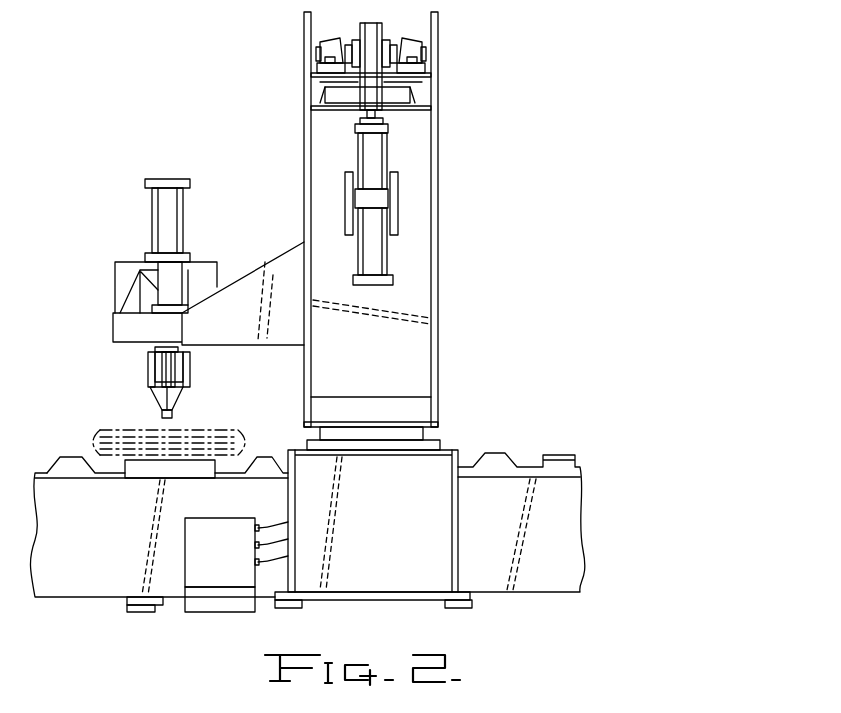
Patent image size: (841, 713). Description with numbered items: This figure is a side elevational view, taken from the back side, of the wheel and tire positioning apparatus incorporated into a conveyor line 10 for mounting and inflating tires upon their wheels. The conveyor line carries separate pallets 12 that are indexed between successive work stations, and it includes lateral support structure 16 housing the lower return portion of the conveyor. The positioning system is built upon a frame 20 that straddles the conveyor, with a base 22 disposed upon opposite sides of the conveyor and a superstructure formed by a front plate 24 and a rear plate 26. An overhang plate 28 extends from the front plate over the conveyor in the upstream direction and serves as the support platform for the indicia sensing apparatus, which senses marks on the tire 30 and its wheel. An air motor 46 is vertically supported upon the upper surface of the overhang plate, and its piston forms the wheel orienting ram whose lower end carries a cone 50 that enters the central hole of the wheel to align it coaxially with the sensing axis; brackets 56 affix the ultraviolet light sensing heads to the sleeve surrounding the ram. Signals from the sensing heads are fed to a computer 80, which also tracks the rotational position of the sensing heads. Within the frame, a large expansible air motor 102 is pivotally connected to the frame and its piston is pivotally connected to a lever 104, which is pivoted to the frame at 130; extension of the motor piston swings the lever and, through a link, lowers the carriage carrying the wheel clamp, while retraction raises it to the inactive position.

The conveyor line 10 is at (518, 447).
The pallet 12 is at (207, 458).
The lateral support structure 16 is at (88, 554).
The frame 20 is at (448, 310).
The base 22 is at (358, 554).
The front plate 24 is at (304, 150).
The rear plate 26 is at (438, 170).
The overhang plate 28 is at (113, 325).
The tire 30 is at (99, 427).
The air motor 46 is at (152, 226).
The cone 50 is at (182, 402).
The bracket 56 is at (147, 367).
The computer 80 is at (205, 551).
The air motor 102 is at (400, 248).
The lever 104 is at (372, 30).
The pivot 130 is at (343, 52).